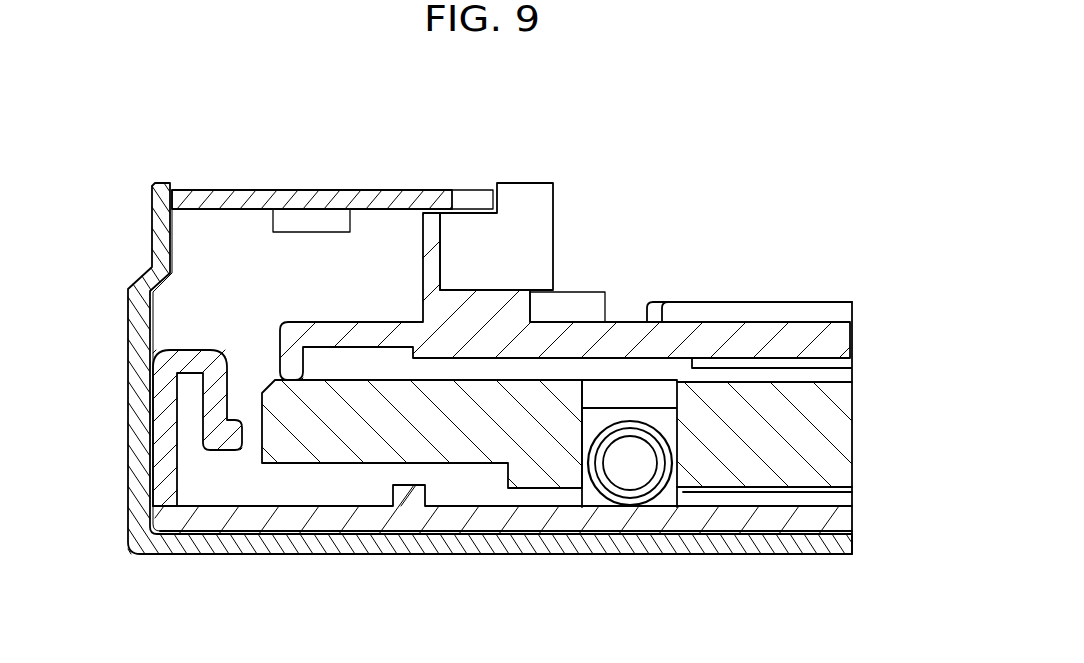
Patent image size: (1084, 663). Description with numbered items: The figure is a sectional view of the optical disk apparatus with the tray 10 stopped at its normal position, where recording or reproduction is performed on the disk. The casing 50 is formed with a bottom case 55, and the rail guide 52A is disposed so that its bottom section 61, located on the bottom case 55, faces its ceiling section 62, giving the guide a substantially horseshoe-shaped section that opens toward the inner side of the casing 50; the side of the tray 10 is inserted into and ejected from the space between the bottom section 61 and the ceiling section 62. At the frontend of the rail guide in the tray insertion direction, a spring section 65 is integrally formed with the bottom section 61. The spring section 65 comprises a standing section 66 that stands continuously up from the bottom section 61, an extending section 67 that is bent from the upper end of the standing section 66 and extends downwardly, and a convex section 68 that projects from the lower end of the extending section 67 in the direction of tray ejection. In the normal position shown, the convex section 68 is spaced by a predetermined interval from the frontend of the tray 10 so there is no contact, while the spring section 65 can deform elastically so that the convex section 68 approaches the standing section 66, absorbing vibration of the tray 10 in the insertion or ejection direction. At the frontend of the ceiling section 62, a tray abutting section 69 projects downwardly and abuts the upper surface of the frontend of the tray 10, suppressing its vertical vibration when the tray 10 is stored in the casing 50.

The tray 10 is at (332, 450).
The casing 50 is at (713, 196).
The rail guide 52A is at (628, 306).
The bottom case 55 is at (212, 548).
The bottom section 61 is at (823, 523).
The ceiling section 62 is at (748, 332).
The spring section 65 is at (197, 332).
The standing section 66 is at (160, 443).
The extending section 67 is at (217, 403).
The convex section 68 is at (230, 438).
The tray abutting section 69 is at (293, 372).